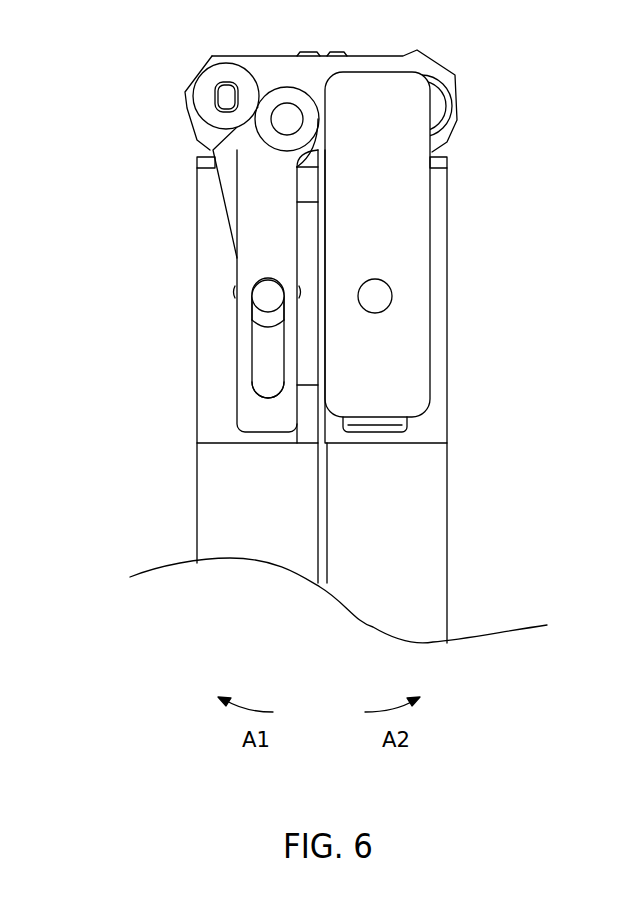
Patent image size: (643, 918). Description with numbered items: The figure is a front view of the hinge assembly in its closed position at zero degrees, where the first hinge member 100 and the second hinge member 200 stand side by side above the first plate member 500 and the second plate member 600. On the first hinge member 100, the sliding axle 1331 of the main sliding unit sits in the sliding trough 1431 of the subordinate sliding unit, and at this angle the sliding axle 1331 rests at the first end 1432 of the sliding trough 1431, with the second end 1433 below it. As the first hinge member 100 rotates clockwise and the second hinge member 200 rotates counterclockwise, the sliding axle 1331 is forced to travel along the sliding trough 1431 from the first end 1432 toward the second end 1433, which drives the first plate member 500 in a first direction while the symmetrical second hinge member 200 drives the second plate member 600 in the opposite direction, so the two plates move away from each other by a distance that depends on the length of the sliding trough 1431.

The first hinge member 100 is at (218, 198).
The second hinge member 200 is at (435, 213).
The first plate member 500 is at (237, 515).
The second plate member 600 is at (413, 540).
The sliding axle 1331 is at (267, 293).
The sliding trough 1431 is at (285, 348).
The first end 1432 is at (263, 280).
The second end 1433 is at (267, 397).